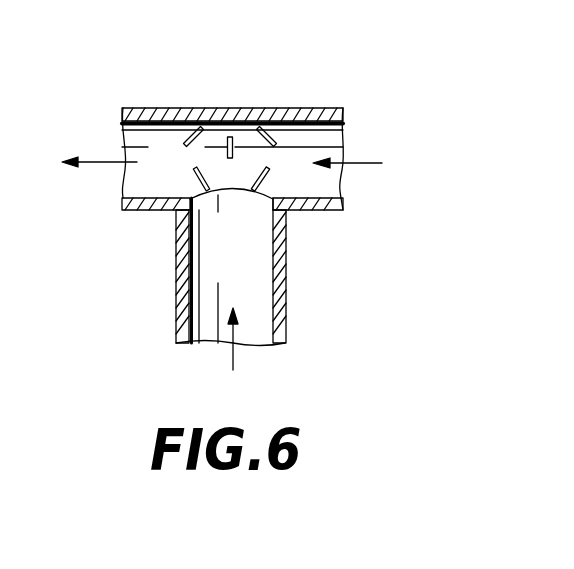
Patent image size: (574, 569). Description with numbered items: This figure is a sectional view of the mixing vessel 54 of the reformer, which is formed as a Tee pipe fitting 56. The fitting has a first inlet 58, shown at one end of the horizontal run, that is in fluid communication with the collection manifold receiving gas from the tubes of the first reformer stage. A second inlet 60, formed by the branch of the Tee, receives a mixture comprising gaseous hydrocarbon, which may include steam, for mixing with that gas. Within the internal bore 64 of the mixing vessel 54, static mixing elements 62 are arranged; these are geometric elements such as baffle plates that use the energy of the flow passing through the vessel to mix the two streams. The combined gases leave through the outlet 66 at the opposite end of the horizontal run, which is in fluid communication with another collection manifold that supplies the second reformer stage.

The mixing vessel 54 is at (312, 77).
The Tee pipe fitting 56 is at (334, 326).
The first inlet 58 is at (380, 128).
The second inlet 60 is at (293, 398).
The static mixing elements 62 is at (190, 132).
The internal bore 64 is at (252, 137).
The outlet 66 is at (82, 210).